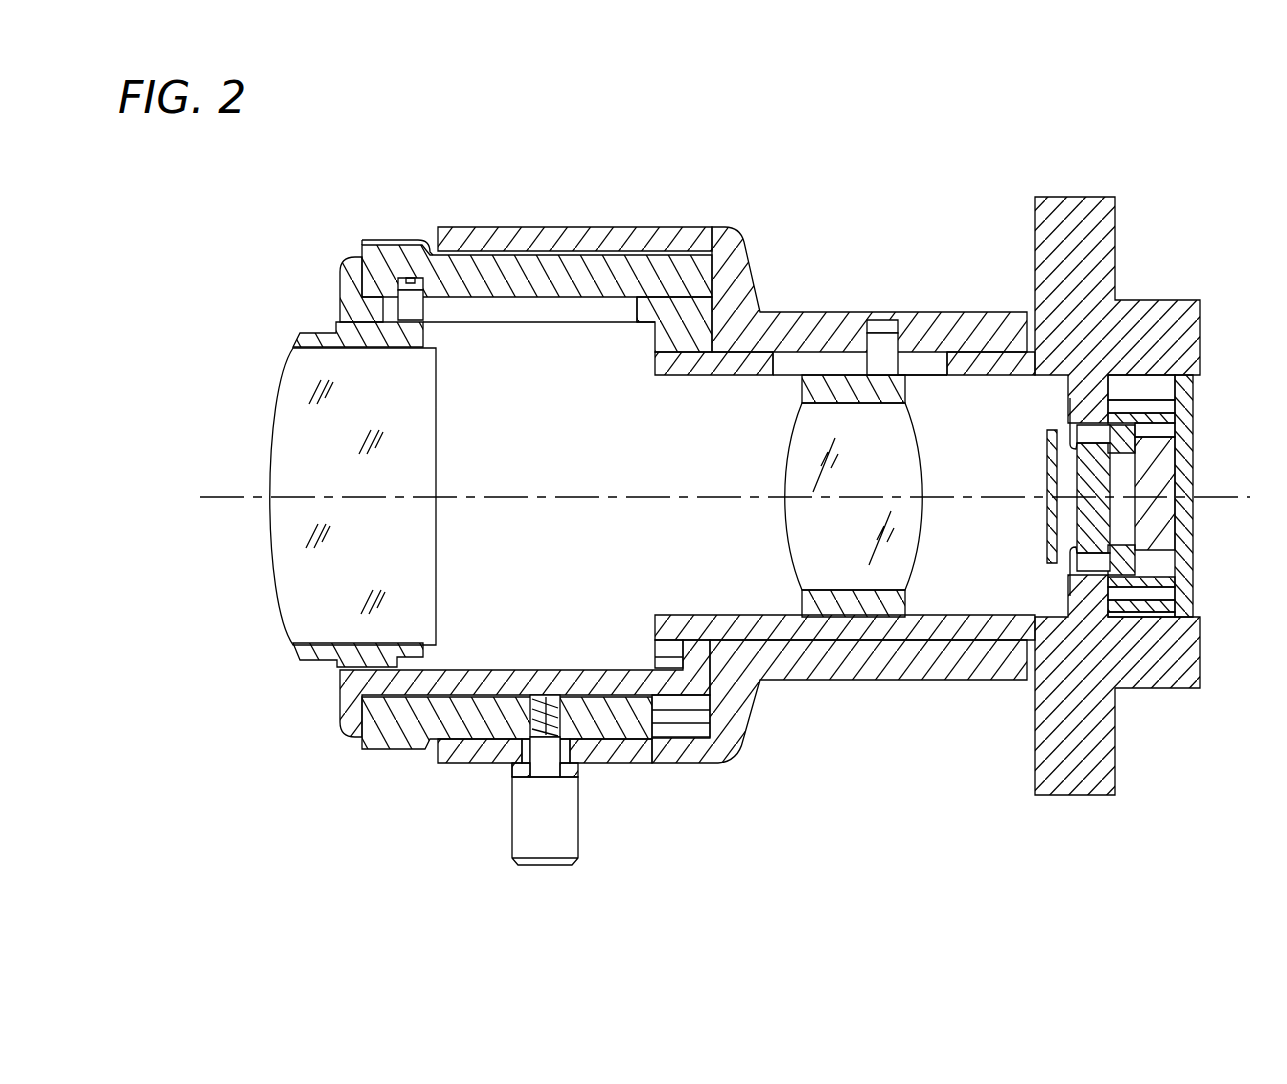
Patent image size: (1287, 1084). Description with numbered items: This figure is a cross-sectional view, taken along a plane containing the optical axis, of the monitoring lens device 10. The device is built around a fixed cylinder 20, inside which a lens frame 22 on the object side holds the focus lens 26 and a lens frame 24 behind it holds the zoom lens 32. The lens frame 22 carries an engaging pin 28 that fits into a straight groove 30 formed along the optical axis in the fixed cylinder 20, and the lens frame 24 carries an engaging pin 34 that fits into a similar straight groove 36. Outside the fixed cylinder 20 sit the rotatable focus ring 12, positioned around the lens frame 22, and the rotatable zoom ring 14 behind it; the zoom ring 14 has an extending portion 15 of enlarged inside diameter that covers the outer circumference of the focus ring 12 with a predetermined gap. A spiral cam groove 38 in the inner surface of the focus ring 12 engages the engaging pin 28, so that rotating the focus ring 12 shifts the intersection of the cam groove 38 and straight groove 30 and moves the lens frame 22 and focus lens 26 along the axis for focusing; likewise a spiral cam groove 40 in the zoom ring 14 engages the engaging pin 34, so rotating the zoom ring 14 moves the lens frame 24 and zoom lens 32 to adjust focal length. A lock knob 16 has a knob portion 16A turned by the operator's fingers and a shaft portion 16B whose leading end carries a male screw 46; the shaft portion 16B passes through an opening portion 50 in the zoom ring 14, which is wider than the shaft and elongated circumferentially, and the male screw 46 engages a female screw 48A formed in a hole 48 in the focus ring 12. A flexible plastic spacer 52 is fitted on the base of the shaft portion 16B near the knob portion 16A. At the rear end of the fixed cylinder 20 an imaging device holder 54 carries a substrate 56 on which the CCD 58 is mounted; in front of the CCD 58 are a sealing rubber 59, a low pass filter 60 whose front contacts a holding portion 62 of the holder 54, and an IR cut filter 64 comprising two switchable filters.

The monitoring lens device 10 is at (763, 842).
The focus ring 12 is at (407, 256).
The zoom ring 14 is at (951, 330).
The extending portion 15 is at (600, 233).
The lock knob 16 is at (538, 825).
The knob portion 16A is at (562, 837).
The shaft portion 16B is at (503, 718).
The fixed cylinder 20 is at (665, 307).
The lens frame 22 is at (310, 335).
The lens frame 24 is at (832, 385).
The focus lens 26 is at (283, 460).
The engaging pin 28 is at (424, 288).
The straight groove 30 is at (526, 307).
The zoom lens 32 is at (790, 472).
The engaging pin 34 is at (901, 345).
The straight groove 36 is at (797, 357).
The cam groove 38 is at (375, 241).
The cam groove 40 is at (874, 320).
The male screw 46 is at (560, 693).
The hole 48 is at (538, 698).
The female screw 48A is at (574, 745).
The opening portion 50 is at (538, 735).
The spacer 52 is at (512, 773).
The imaging device holder 54 is at (1192, 331).
The substrate 56 is at (1195, 488).
The CCD 58 is at (1163, 452).
The sealing rubber 59 is at (1162, 592).
The low pass filter 60 is at (1077, 534).
The holding portion 62 is at (1075, 423).
The IR cut filter 64 is at (1045, 529).